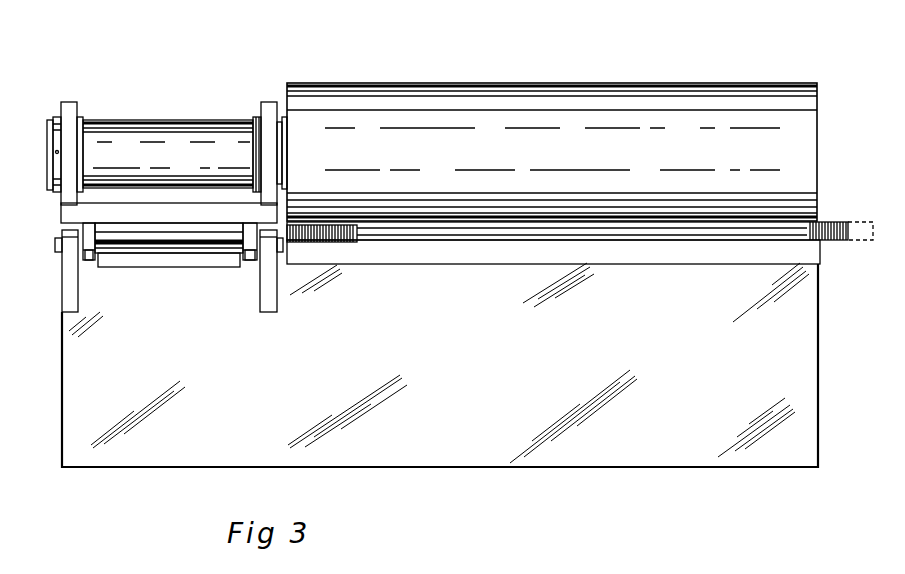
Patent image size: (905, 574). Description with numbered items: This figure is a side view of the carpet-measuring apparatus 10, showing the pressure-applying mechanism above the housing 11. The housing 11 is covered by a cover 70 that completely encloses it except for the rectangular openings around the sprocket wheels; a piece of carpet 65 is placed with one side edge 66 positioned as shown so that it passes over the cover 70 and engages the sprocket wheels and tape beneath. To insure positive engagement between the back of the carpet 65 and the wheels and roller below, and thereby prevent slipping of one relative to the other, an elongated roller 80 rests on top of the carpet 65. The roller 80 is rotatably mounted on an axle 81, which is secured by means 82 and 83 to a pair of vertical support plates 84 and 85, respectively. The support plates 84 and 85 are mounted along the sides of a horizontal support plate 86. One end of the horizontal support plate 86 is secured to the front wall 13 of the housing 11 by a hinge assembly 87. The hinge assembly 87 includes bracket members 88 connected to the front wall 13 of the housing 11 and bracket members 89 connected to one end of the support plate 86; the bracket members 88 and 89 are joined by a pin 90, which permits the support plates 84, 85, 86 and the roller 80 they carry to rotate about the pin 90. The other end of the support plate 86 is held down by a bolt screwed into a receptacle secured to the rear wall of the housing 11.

The apparatus 10 is at (581, 67).
The housing 11 is at (56, 381).
The front wall 13 is at (367, 338).
The carpet 65 is at (825, 222).
The side edge 66 is at (298, 242).
The cover 70 is at (60, 262).
The elongated roller 80 is at (658, 158).
The axle 81 is at (118, 130).
The securing means 82 is at (58, 117).
The securing means 83 is at (262, 112).
The vertical support plate 84 is at (68, 196).
The vertical support plate 85 is at (272, 157).
The horizontal support plate 86 is at (137, 218).
The hinge assembly 87 is at (185, 270).
The bracket members 88 is at (68, 298).
The bracket members 89 is at (90, 262).
The pin 90 is at (55, 245).